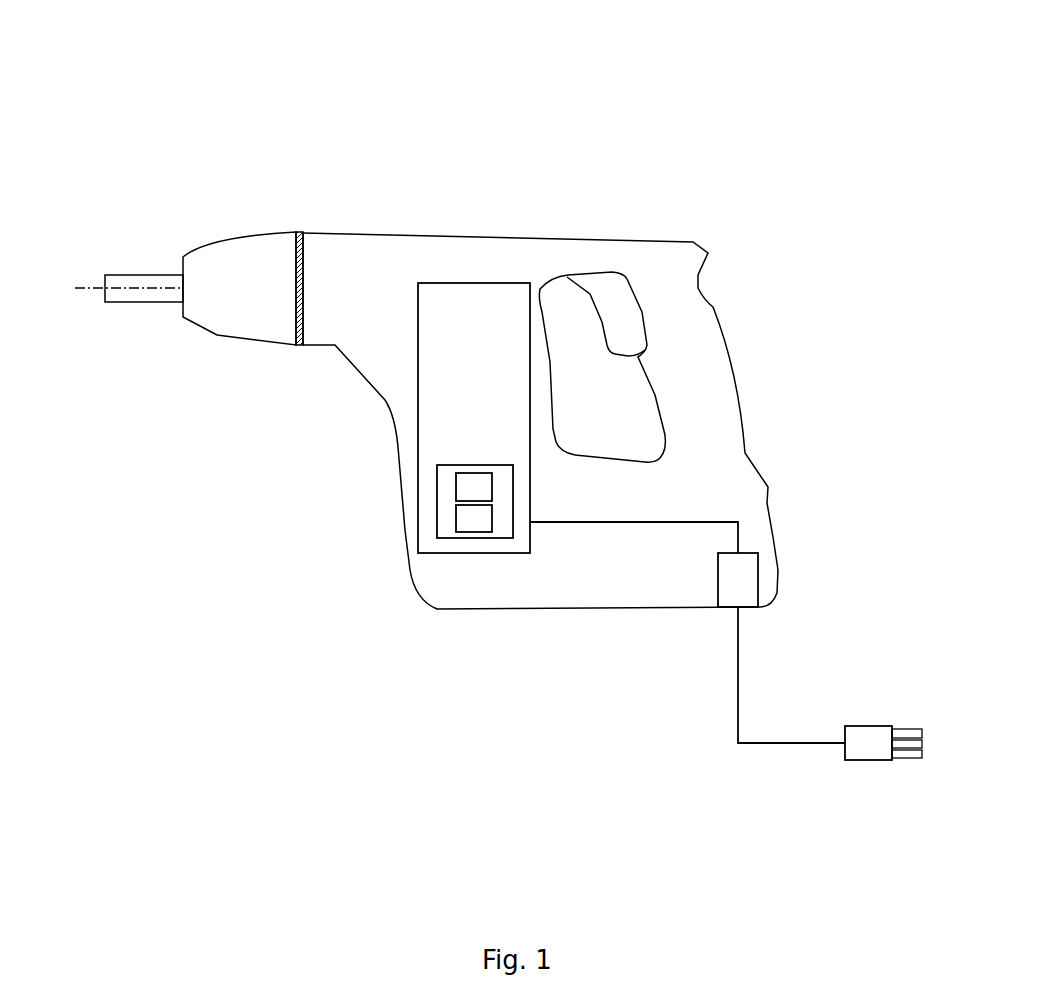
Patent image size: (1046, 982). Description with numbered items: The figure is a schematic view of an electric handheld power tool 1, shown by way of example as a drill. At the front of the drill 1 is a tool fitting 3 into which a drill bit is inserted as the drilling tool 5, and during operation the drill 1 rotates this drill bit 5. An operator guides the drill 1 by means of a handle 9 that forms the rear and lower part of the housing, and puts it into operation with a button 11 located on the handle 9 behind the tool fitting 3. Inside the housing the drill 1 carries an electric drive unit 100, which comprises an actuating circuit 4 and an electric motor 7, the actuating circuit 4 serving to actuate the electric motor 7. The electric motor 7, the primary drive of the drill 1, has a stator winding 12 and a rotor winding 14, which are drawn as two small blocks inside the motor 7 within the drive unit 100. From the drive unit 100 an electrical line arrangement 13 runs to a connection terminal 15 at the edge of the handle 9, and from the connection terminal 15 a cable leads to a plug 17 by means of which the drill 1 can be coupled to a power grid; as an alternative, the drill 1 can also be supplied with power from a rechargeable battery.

The electric handheld power tool 1 is at (774, 58).
The tool fitting 3 is at (243, 237).
The drilling tool 5 is at (146, 302).
The handle 9 is at (713, 306).
The button 11 is at (598, 272).
The electric drive unit 100 is at (468, 283).
The actuating circuit 4 is at (474, 418).
The electric motor 7 is at (462, 465).
The stator winding 12 is at (474, 487).
The rotor winding 14 is at (474, 519).
The electrical line arrangement 13 is at (627, 522).
The connection terminal 15 is at (758, 582).
The plug 17 is at (865, 726).